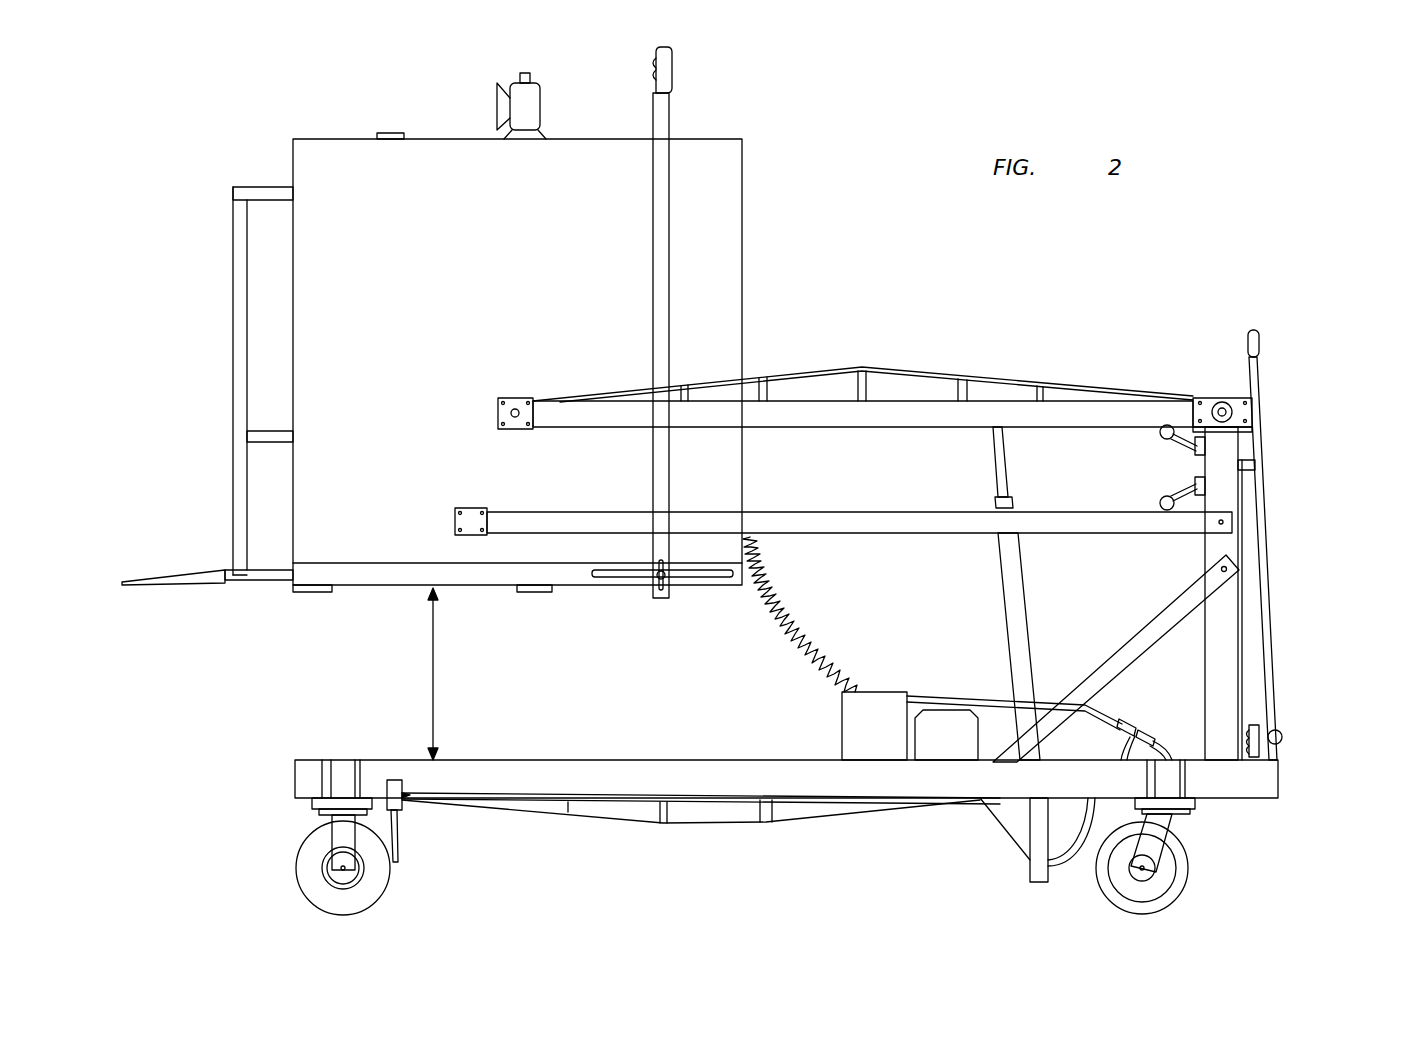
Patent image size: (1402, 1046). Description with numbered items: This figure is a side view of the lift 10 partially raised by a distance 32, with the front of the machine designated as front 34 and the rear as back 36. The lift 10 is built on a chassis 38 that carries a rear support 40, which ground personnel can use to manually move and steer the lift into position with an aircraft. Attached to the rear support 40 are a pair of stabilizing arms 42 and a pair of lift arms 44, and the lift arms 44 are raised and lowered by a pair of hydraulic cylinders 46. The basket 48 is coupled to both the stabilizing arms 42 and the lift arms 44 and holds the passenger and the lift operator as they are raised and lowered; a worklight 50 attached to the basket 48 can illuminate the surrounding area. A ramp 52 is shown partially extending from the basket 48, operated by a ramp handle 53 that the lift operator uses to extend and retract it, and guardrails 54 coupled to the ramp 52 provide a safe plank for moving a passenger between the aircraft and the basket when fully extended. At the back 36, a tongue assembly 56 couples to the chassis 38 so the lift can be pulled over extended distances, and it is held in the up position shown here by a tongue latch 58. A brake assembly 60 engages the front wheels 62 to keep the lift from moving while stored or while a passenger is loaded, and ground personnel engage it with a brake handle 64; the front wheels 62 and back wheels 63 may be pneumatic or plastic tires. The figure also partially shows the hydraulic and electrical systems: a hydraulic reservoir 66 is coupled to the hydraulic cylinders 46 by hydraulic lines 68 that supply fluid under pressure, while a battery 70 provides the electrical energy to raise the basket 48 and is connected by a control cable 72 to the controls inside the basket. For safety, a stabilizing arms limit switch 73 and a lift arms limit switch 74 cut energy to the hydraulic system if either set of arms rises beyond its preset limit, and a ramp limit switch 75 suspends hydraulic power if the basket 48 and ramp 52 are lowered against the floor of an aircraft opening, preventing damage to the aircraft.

The lift 10 is at (1027, 258).
The distance 32 is at (437, 684).
The front 34 is at (237, 687).
The back 36 is at (1311, 628).
The chassis 38 is at (1245, 801).
The rear support 40 is at (1208, 655).
The stabilizing arms 42 is at (900, 535).
The lift arms 44 is at (858, 428).
The hydraulic cylinders 46 is at (1032, 598).
The basket 48 is at (742, 210).
The worklight 50 is at (542, 106).
The ramp 52 is at (263, 582).
The ramp handle 53 is at (672, 72).
The guardrails 54 is at (270, 186).
The tongue assembly 56 is at (1262, 380).
The tongue latch 58 is at (1250, 472).
The brake assembly 60 is at (417, 820).
The front wheels 62 is at (392, 886).
The back wheels 63 is at (1189, 875).
The brake handle 64 is at (1262, 722).
The hydraulic reservoir 66 is at (874, 726).
The hydraulic lines 68 is at (1110, 717).
The battery 70 is at (946, 735).
The control cable 72 is at (806, 622).
The stabilizing arms limit switch 73 is at (1196, 482).
The lift arms limit switch 74 is at (1196, 450).
The ramp limit switch 75 is at (143, 587).